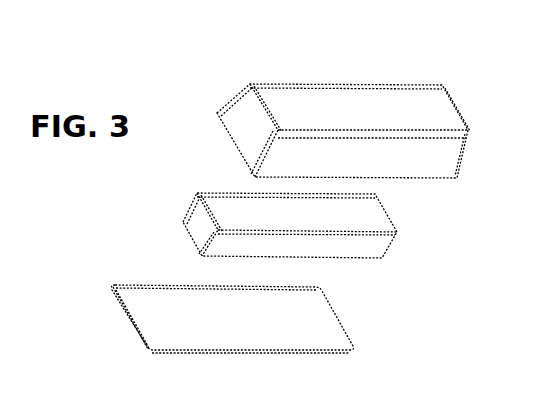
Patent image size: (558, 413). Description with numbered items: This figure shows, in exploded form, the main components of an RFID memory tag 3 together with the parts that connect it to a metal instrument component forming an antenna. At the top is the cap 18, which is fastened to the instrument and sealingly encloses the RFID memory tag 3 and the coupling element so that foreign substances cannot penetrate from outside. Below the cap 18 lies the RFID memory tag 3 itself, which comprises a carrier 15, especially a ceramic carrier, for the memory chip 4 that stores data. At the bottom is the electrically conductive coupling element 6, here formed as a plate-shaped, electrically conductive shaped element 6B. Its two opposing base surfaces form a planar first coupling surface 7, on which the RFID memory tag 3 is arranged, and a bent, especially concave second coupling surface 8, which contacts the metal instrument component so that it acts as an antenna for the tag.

The RFID memory tag 3 is at (511, 174).
The cap 18 is at (475, 97).
The memory chip 4 is at (336, 225).
The carrier 15 is at (410, 218).
The electrically conductive coupling element 6 is at (255, 324).
The shaped element 6B is at (255, 324).
The first coupling surface 7 is at (262, 330).
The second coupling surface 8 is at (115, 336).